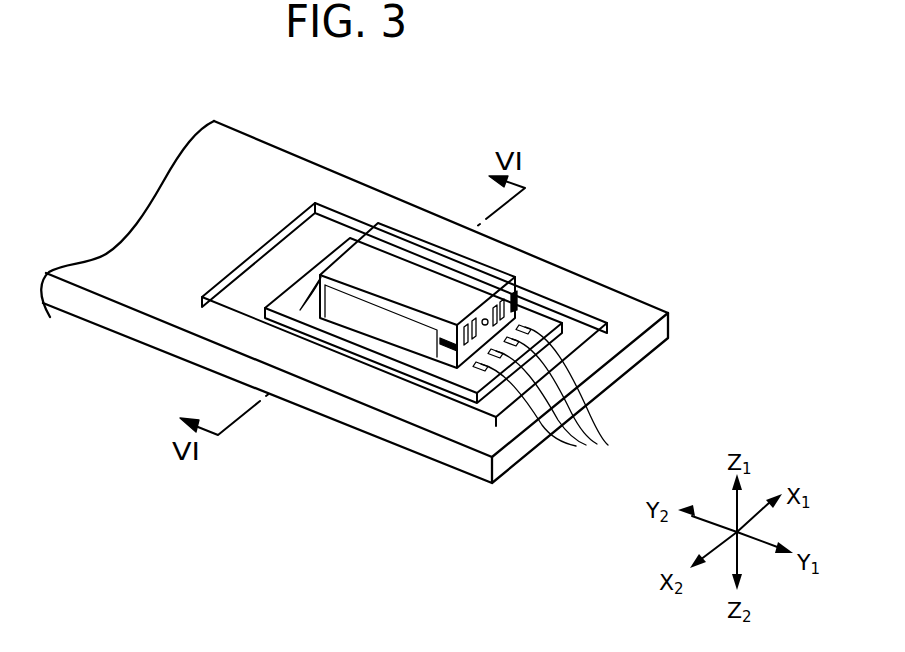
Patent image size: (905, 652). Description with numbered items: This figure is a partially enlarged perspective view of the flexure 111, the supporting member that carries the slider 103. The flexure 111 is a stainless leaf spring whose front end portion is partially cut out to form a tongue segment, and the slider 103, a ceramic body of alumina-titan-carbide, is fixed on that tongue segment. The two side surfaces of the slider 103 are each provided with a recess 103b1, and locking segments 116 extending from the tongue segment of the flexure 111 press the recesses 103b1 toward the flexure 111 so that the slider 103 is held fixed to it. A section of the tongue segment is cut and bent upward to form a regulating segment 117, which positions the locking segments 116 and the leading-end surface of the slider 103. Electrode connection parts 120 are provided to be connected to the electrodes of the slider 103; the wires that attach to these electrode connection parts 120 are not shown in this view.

The flexure 111 is at (162, 335).
The locking segments 116 is at (390, 328).
The slider 103 is at (404, 263).
The recesses 103b1 is at (517, 290).
The regulating segment 117 is at (300, 310).
The electrode connection parts 120 is at (566, 394).